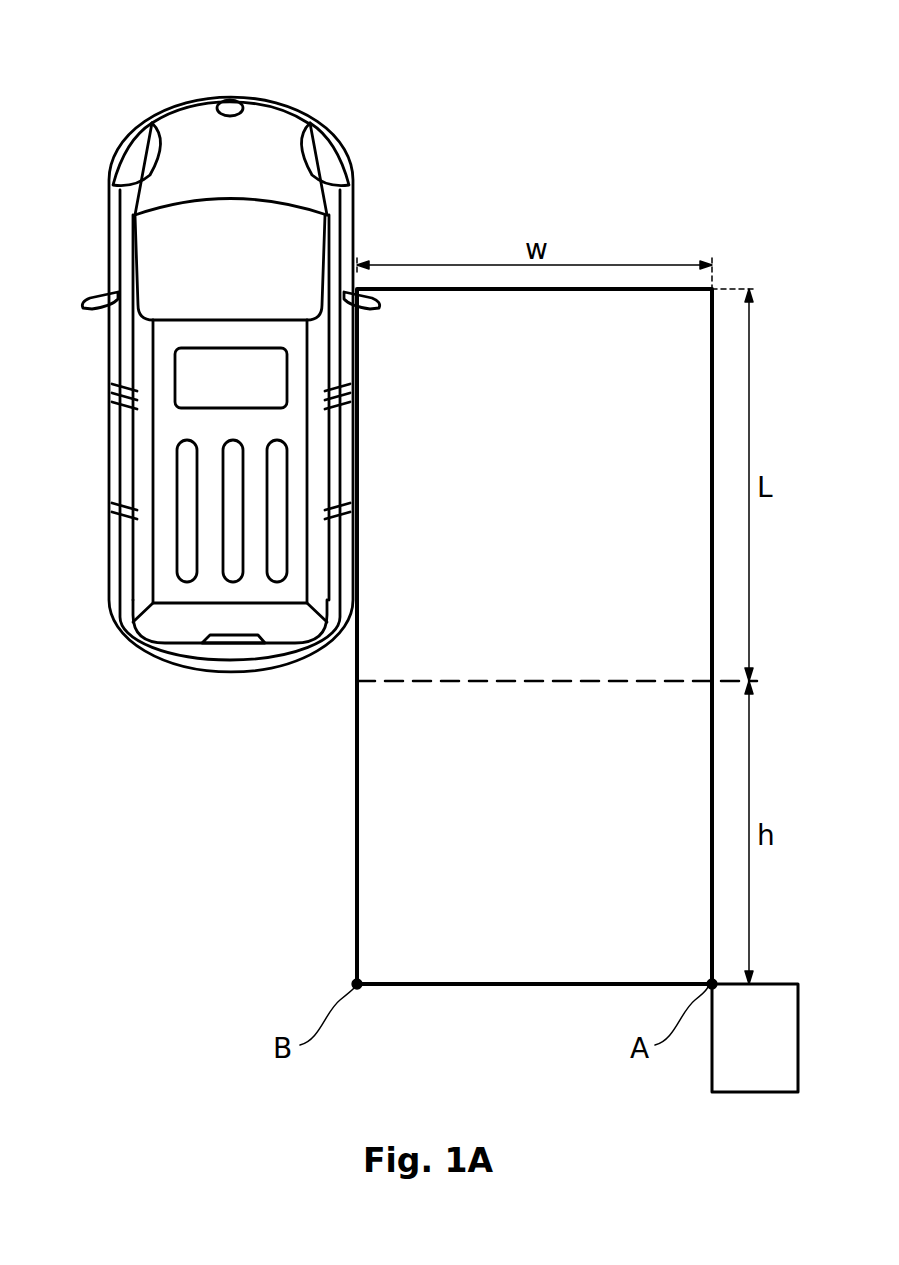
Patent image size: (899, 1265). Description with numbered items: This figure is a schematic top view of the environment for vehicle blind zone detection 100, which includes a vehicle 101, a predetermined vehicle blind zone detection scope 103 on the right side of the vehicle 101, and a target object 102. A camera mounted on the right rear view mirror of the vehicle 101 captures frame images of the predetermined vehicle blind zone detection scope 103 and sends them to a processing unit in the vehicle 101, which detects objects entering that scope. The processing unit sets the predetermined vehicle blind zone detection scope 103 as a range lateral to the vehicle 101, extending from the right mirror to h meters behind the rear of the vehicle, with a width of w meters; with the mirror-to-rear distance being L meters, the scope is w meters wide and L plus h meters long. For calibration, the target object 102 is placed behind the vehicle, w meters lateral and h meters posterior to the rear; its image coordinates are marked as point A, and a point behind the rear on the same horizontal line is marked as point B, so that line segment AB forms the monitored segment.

The environment for vehicle blind zone detection 100 is at (86, 27).
The vehicle 101 is at (277, 100).
The target object 102 is at (780, 1054).
The predetermined vehicle blind zone detection scope 103 is at (561, 500).